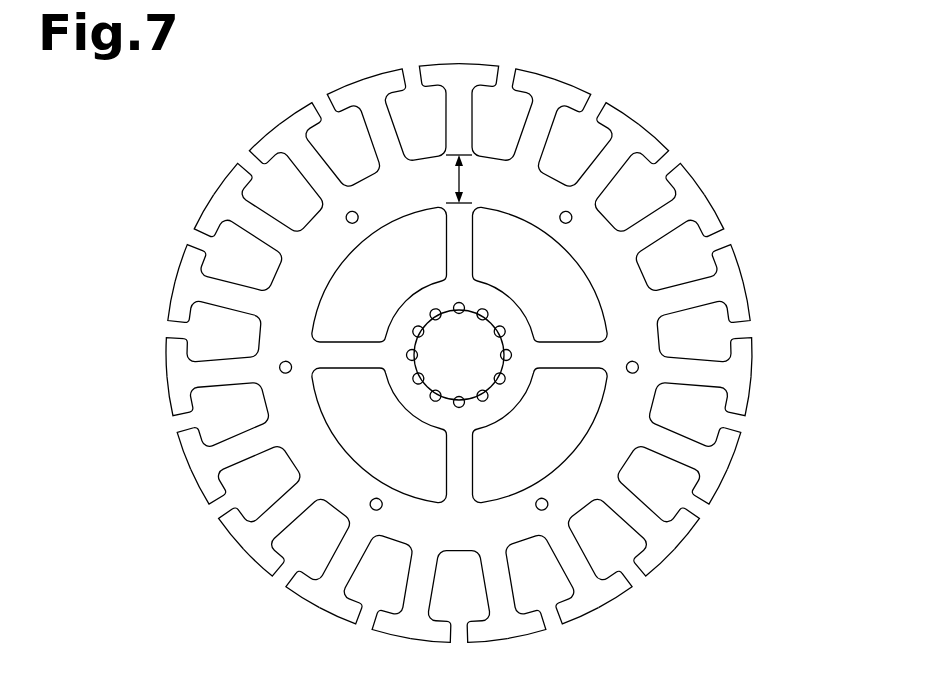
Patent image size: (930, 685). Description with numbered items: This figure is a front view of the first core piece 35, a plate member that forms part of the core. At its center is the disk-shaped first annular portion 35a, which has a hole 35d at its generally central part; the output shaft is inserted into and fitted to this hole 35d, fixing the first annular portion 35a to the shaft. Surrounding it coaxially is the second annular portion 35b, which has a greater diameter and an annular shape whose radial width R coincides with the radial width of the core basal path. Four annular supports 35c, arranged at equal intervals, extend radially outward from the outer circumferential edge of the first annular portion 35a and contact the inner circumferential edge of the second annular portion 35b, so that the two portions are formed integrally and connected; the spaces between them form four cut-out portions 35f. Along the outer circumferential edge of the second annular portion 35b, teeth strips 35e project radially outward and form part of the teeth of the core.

The first core piece 35 is at (722, 136).
The first annular portion 35a is at (479, 383).
The second annular portion 35b is at (488, 351).
The annular supports 35c is at (456, 337).
The hole 35d is at (457, 315).
The teeth strips 35e is at (665, 230).
The cut-out portions 35f is at (390, 228).